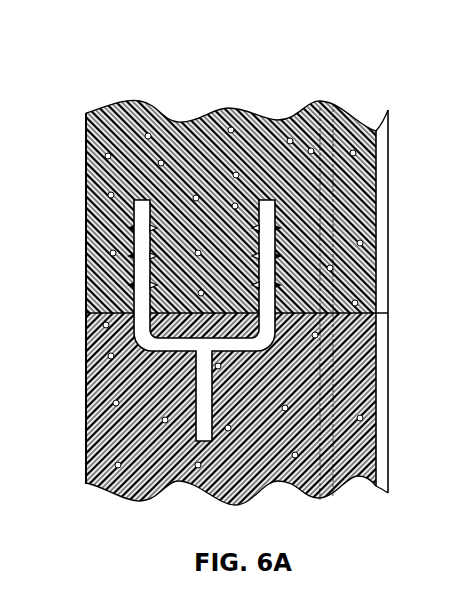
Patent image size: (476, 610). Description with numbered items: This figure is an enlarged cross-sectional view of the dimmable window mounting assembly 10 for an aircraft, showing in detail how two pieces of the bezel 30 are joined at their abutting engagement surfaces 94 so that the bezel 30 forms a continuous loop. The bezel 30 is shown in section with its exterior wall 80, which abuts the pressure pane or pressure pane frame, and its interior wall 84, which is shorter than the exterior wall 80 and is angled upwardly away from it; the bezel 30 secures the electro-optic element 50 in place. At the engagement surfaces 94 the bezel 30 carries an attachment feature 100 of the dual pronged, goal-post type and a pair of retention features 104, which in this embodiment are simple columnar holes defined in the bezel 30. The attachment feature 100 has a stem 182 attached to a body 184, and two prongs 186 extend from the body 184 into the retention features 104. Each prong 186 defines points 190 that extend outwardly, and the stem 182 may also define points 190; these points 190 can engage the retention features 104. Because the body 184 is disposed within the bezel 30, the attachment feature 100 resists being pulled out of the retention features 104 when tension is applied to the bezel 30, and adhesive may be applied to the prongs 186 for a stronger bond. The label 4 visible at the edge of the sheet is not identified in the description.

The dimmable window mounting assembly 10 is at (312, 68).
The bezel 30 is at (74, 135).
The attachment feature 100 is at (108, 198).
The retention feature 104 is at (130, 192).
The point 190 is at (122, 239).
The prong 186 is at (136, 268).
The engagement surface 94 is at (78, 305).
The stem 182 is at (198, 382).
The body 184 is at (262, 378).
The interior wall 84 is at (78, 428).
The exterior wall 80 is at (368, 433).
The electro-optic element 50 is at (320, 446).
The housing section 4 is at (11, 554).